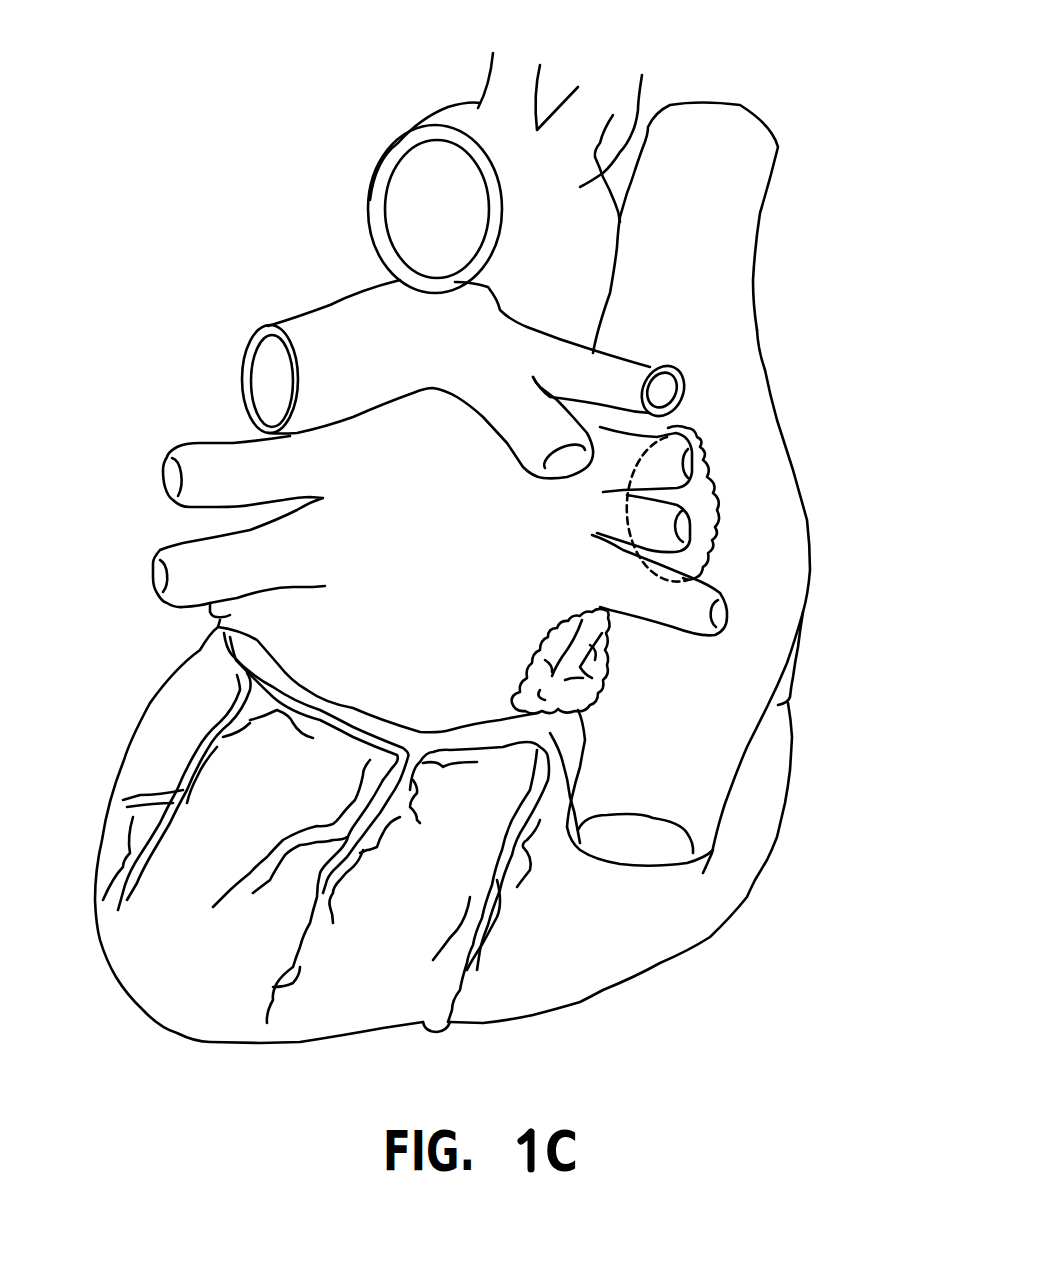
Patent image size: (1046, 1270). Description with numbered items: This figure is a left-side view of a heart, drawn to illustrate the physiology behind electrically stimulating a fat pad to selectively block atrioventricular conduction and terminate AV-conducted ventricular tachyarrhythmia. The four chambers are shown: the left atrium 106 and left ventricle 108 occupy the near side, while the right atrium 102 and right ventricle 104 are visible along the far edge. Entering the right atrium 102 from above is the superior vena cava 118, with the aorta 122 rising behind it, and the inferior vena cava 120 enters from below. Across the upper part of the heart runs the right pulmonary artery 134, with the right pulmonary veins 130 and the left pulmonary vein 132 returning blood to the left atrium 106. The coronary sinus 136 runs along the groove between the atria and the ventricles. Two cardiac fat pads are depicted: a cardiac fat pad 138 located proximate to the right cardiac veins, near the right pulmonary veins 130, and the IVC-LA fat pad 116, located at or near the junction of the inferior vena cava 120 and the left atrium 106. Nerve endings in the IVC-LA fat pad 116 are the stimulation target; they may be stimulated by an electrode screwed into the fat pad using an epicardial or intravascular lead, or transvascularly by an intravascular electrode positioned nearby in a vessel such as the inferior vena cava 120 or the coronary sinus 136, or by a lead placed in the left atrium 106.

The right atrium 102 is at (740, 423).
The right ventricle 104 is at (588, 978).
The left atrium 106 is at (317, 645).
The left ventricle 108 is at (140, 965).
The IVC-LA fat pad 116 is at (590, 663).
The superior vena cava 118 is at (738, 177).
The inferior vena cava 120 is at (700, 810).
The aorta 122 is at (642, 76).
The right pulmonary veins 130 is at (627, 470).
The left pulmonary vein 132 is at (183, 473).
The right pulmonary artery 134 is at (367, 315).
The coronary sinus 136 is at (338, 713).
The cardiac fat pad 138 is at (703, 515).